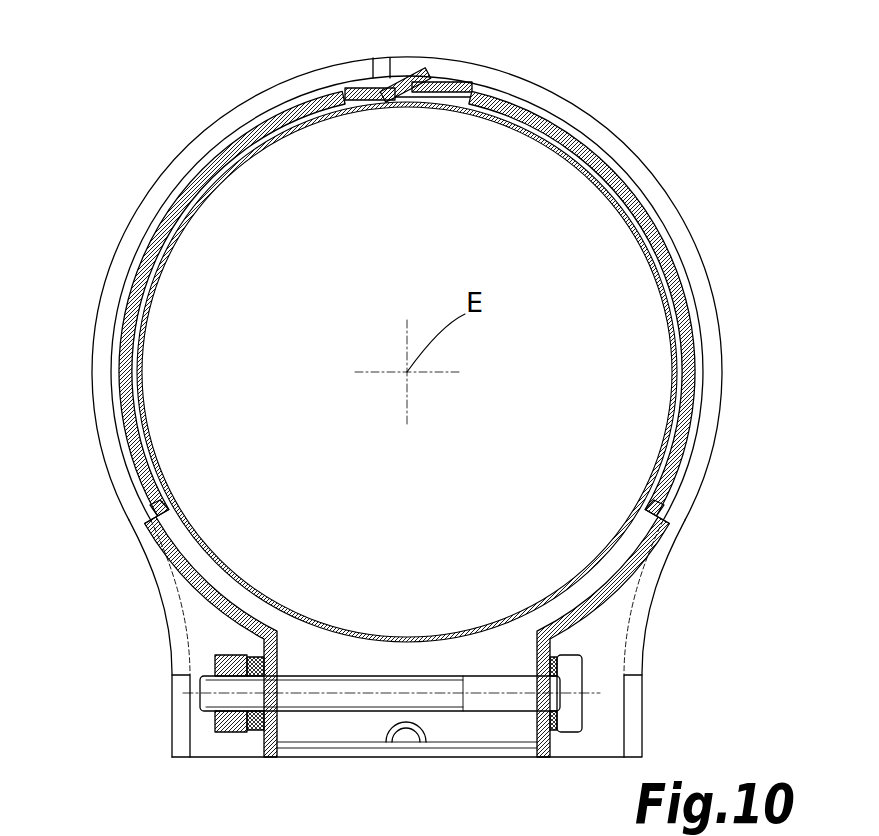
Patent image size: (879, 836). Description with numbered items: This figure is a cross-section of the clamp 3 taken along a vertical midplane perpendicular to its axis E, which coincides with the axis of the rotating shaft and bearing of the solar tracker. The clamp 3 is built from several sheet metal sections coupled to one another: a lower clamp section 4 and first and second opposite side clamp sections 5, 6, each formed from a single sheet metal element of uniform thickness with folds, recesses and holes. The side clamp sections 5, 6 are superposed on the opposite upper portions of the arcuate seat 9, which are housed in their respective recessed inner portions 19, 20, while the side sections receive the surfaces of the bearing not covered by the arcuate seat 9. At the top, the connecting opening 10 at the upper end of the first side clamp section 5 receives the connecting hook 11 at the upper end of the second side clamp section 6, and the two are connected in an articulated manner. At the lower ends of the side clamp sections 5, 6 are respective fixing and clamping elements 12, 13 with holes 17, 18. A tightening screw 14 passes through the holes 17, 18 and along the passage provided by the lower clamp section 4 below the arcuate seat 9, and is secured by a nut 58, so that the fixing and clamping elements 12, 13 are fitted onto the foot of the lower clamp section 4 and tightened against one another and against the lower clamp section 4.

The clamp 3 is at (148, 92).
The lower clamp section 4 is at (403, 622).
The first side clamp section 5 is at (114, 218).
The second side clamp section 6 is at (700, 218).
The arcuate seat 9 is at (495, 632).
The connecting opening 10 is at (389, 78).
The connecting hook 11 is at (432, 72).
The fixing and clamping element 12 is at (235, 752).
The fixing and clamping element 13 is at (603, 745).
The tightening screw 14 is at (371, 703).
The hole 17 is at (277, 713).
The hole 18 is at (541, 712).
The recessed inner portion 19 is at (168, 555).
The recessed inner portion 20 is at (630, 572).
The nut 58 is at (215, 720).